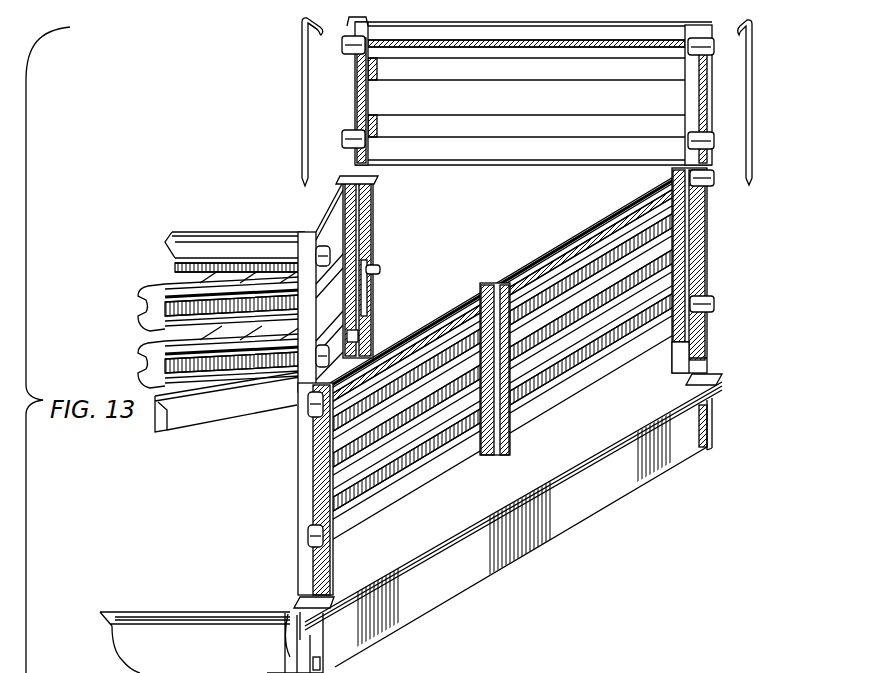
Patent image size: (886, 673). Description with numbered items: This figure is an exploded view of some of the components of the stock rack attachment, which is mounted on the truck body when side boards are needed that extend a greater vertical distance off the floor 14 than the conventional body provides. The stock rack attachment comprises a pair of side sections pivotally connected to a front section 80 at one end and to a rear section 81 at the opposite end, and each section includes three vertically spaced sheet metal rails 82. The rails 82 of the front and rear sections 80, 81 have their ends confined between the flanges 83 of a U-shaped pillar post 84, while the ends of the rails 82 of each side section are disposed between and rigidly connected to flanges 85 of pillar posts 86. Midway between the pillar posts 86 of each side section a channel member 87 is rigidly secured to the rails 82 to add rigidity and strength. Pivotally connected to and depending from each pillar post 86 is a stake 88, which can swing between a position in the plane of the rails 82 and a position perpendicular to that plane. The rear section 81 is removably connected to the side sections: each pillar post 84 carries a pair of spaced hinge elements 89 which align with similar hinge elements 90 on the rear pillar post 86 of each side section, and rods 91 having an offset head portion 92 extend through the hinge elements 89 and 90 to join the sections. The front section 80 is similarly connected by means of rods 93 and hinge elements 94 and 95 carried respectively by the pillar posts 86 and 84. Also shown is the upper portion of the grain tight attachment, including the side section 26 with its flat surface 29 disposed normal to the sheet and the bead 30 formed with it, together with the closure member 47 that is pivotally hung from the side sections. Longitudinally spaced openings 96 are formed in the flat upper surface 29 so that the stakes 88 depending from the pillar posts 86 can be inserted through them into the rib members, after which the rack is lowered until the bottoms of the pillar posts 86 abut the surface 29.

The floor 14 is at (474, 249).
The side section 26 is at (517, 537).
The flat surface 29 is at (610, 440).
The bead 30 is at (340, 602).
The closure member 47 is at (183, 643).
The front section 80 is at (173, 86).
The rear section 81 is at (243, 390).
The sheet metal rail 82 is at (543, 157).
The flange 83 is at (350, 46).
The U-shaped pillar post 84 is at (347, 20).
The flange 85 is at (340, 181).
The pillar post 86 is at (351, 178).
The channel member 87 is at (487, 290).
The stake 88 is at (355, 334).
The hinge element 89 is at (332, 258).
The hinge element 90 is at (310, 410).
The rod 91 is at (300, 106).
The offset head portion 92 is at (300, 40).
The rod 93 is at (753, 97).
The hinge element 94 is at (714, 180).
The hinge element 95 is at (712, 55).
The opening 96 is at (718, 386).